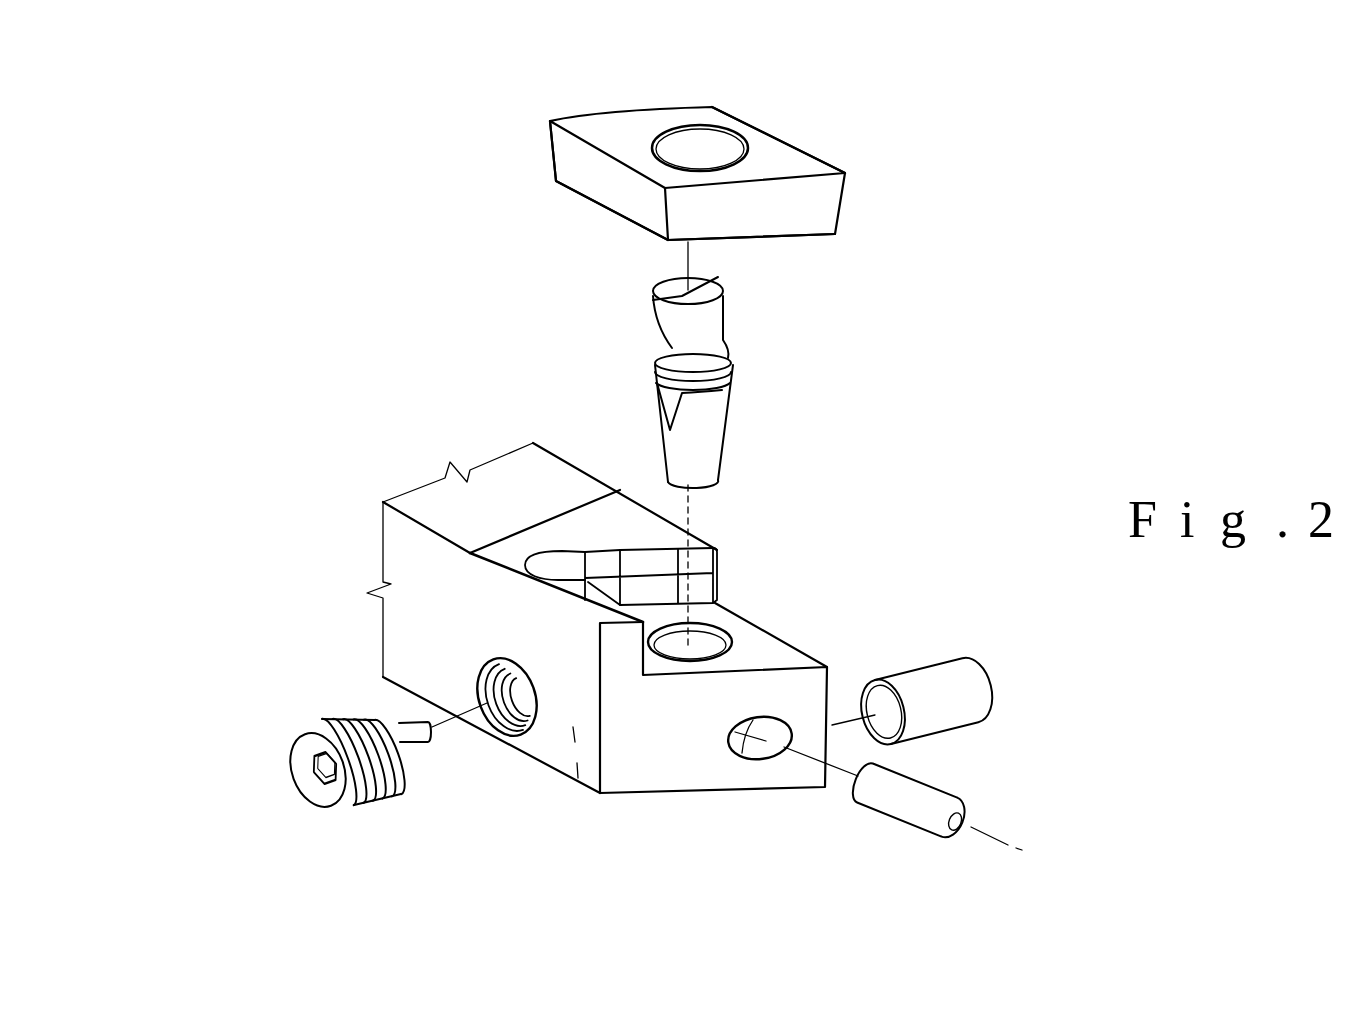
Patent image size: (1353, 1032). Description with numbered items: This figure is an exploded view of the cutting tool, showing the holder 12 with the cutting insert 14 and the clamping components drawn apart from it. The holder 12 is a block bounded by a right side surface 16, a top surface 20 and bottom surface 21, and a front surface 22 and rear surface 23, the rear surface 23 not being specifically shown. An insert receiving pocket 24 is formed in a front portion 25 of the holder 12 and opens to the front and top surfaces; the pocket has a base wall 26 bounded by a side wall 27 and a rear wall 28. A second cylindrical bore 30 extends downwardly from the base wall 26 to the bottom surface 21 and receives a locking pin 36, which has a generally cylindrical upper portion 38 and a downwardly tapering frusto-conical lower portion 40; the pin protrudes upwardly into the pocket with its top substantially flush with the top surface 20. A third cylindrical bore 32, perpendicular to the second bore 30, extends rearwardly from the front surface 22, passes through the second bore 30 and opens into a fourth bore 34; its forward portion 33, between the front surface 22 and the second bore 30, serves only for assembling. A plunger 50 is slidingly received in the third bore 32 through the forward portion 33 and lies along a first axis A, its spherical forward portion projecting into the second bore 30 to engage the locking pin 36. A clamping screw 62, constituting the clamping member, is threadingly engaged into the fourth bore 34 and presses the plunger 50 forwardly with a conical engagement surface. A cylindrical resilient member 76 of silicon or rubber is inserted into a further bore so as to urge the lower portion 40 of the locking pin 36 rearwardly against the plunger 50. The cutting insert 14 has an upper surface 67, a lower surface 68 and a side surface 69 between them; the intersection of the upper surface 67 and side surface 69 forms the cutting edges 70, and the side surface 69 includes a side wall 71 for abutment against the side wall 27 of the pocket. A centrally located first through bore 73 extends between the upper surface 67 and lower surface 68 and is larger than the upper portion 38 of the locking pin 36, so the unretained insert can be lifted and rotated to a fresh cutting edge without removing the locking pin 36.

The holder 12 is at (646, 651).
The cutting insert 14 is at (728, 198).
The right side surface 16 is at (408, 648).
The top surface 20 is at (568, 483).
The bottom surface 21 is at (572, 805).
The front surface 22 is at (658, 775).
The rear surface 23 is at (309, 515).
The insert receiving pocket 24 is at (844, 594).
The front portion 25 is at (941, 627).
The base wall 26 is at (783, 658).
The side wall 27 is at (614, 650).
The rear wall 28 is at (702, 563).
The second cylindrical bore 30 is at (713, 643).
The third cylindrical bore 32 is at (760, 761).
The forward portion 33 is at (790, 738).
The fourth bore 34 is at (508, 737).
The locking pin 36 is at (772, 463).
The upper portion 38 is at (748, 313).
The lower portion 40 is at (772, 434).
The plunger 50 is at (903, 813).
The clamping screw 62 is at (245, 742).
The upper surface 67 is at (588, 125).
The lower surface 68 is at (638, 207).
The side surface 69 is at (810, 211).
The cutting edges 70 is at (810, 148).
The side wall 71 is at (595, 185).
The first through bore 73 is at (733, 147).
The resilient member 76 is at (960, 697).
The first axis A is at (998, 843).